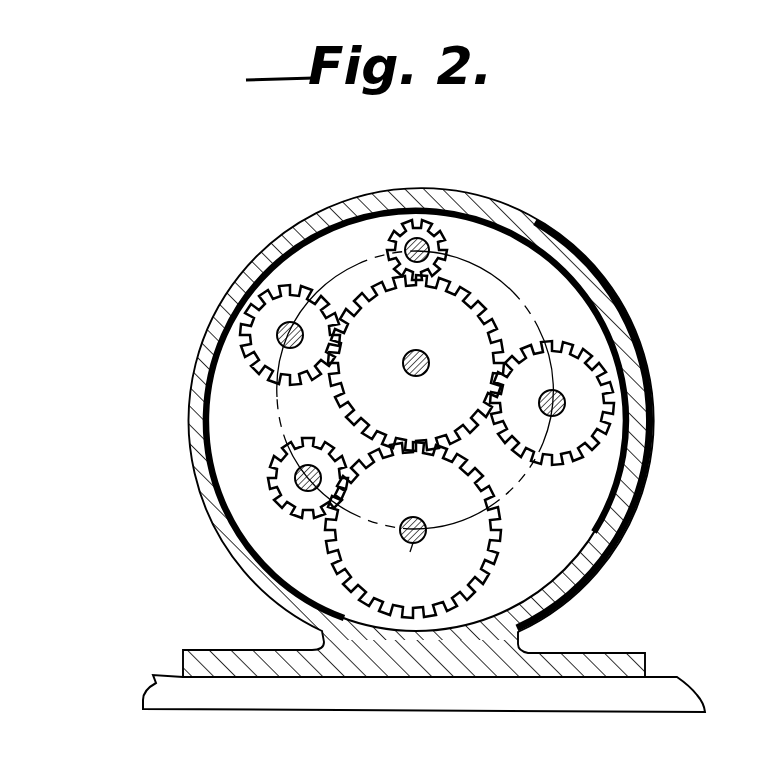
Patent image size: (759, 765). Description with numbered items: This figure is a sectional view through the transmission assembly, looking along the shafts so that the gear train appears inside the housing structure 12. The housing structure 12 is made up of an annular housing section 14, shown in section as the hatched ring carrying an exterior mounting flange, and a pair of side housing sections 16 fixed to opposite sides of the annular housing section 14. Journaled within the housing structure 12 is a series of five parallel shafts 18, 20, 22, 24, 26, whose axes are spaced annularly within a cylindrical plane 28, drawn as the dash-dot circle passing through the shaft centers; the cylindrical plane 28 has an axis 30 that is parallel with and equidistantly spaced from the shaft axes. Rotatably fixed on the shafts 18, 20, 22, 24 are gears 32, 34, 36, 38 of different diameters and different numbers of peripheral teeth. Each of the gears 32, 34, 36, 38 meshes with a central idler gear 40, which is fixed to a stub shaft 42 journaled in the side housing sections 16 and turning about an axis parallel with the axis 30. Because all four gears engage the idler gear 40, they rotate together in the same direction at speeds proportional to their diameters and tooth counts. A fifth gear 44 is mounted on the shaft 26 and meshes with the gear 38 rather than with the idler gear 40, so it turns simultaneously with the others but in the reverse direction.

The housing structure 12 is at (178, 362).
The annular housing section 14 is at (354, 208).
The side housing sections 16 is at (602, 480).
The shaft 18 is at (287, 338).
The shaft 20 is at (428, 248).
The shaft 22 is at (563, 419).
The shaft 24 is at (410, 554).
The shaft 26 is at (305, 483).
The cylindrical plane 28 is at (517, 296).
The axis 30 is at (416, 363).
The gear 32 is at (294, 297).
The gear 34 is at (419, 226).
The gear 36 is at (588, 357).
The gear 38 is at (487, 553).
The idler gear 40 is at (443, 303).
The stub shaft 42 is at (420, 352).
The fifth gear 44 is at (278, 452).